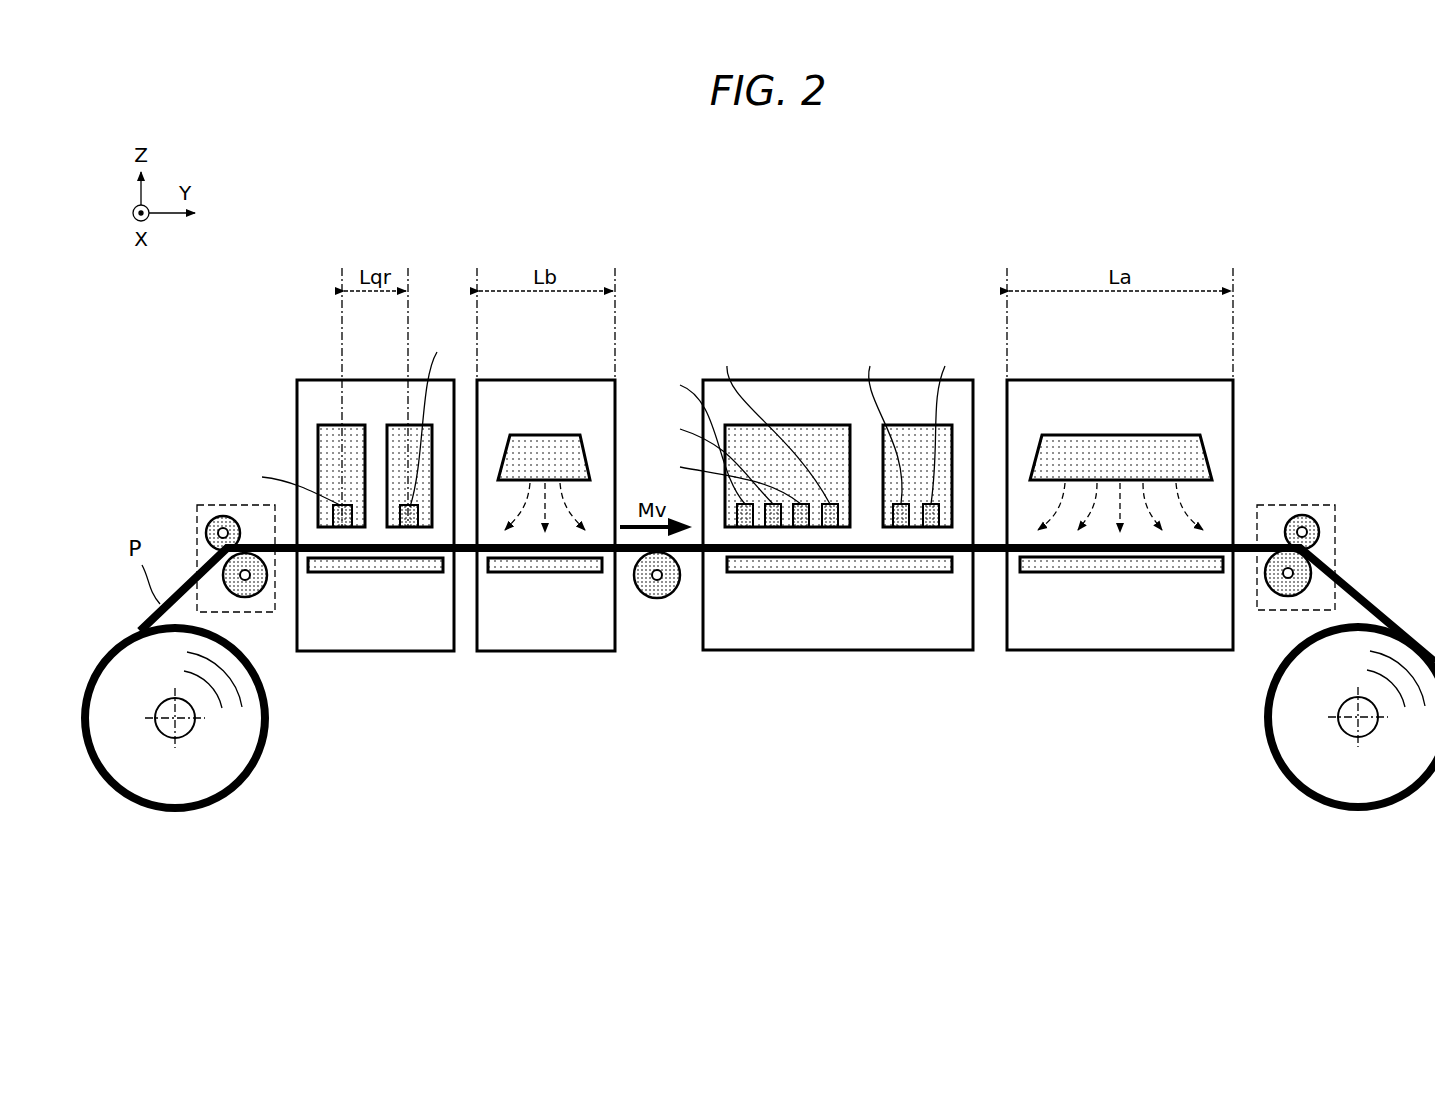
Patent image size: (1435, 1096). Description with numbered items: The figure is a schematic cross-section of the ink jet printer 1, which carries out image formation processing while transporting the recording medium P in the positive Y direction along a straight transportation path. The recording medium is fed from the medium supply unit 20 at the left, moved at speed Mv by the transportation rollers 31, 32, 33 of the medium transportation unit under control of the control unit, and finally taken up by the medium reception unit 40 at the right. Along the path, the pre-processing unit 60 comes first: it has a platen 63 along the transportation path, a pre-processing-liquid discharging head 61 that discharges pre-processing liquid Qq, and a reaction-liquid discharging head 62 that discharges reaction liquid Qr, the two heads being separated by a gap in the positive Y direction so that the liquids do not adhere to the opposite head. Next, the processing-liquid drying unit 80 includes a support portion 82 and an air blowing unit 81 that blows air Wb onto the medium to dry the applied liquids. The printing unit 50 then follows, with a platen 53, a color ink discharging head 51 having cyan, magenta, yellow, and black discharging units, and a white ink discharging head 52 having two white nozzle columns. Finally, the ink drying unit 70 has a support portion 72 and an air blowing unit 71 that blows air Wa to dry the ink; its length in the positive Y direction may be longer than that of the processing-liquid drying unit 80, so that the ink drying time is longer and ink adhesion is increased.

The ink jet printer 1 is at (1306, 237).
The medium supply unit 20 is at (176, 776).
The transportation roller 31 is at (208, 503).
The transportation roller 32 is at (657, 599).
The transportation roller 33 is at (1297, 505).
The medium reception unit 40 is at (1359, 775).
The printing unit 50 is at (845, 652).
The color ink discharging head 51 is at (803, 425).
The white ink discharging head 52 is at (915, 425).
The platen 53 is at (762, 573).
The pre-processing unit 60 is at (390, 653).
The pre-processing-liquid discharging head 61 is at (320, 425).
The reaction-liquid discharging head 62 is at (388, 425).
The platen 63 is at (348, 573).
The ink drying unit 70 is at (1124, 652).
The air blowing unit 71 is at (1118, 435).
The support portion 72 is at (1070, 573).
The processing-liquid drying unit 80 is at (549, 653).
The air blowing unit 81 is at (540, 435).
The support portion 82 is at (507, 573).